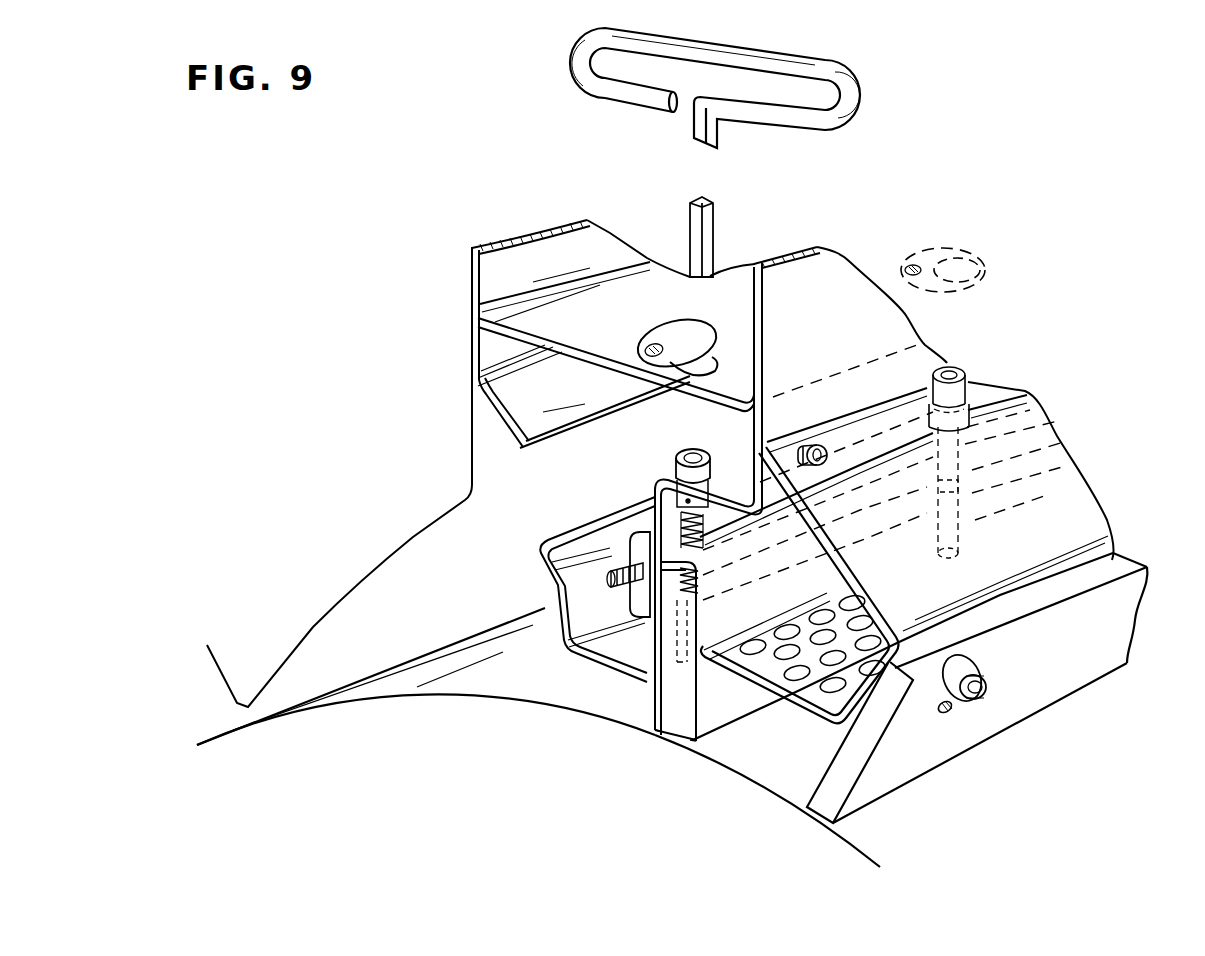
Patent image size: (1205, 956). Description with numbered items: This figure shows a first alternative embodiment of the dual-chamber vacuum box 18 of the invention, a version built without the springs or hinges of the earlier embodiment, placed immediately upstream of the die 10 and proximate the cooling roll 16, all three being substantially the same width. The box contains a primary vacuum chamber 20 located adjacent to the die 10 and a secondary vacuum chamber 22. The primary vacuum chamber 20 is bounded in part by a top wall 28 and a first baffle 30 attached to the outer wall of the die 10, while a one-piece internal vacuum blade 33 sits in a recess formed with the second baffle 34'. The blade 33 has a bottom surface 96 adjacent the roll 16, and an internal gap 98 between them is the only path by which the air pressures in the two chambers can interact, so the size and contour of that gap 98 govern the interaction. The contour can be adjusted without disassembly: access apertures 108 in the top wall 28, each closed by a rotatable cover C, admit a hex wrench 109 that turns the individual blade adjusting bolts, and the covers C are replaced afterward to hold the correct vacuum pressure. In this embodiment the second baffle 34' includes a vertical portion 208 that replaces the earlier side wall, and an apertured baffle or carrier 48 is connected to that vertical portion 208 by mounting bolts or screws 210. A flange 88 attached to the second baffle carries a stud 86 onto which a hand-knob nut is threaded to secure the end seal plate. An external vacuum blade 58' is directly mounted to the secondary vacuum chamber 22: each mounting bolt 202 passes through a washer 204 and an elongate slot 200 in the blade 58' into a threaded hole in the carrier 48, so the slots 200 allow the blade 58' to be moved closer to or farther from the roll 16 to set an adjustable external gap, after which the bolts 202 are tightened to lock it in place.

The die 10 is at (340, 514).
The roll 16 is at (522, 767).
The dual-chamber vacuum box 18 is at (1103, 487).
The primary vacuum chamber 20 is at (492, 568).
The secondary vacuum chamber 22 is at (797, 765).
The top wall 28 is at (592, 331).
The first baffle 30 is at (503, 428).
The internal vacuum blade 33 is at (655, 693).
The second baffle 34' is at (575, 589).
The apertured baffle (carrier) 48 is at (847, 596).
The external vacuum blade 58' is at (921, 679).
The stud 86 is at (606, 578).
The flange 88 is at (640, 547).
The bottom surface 96 is at (665, 734).
The internal gap 98 is at (688, 742).
The access aperture 108 is at (710, 365).
The hex wrench 109 is at (711, 228).
The elongate slot 200 is at (952, 712).
The mounting bolt 202 is at (990, 687).
The washer 204 is at (982, 665).
The vertical portion 208 is at (777, 421).
The mounting bolts or screws 210 is at (830, 452).
The rotatable cover C is at (692, 333).